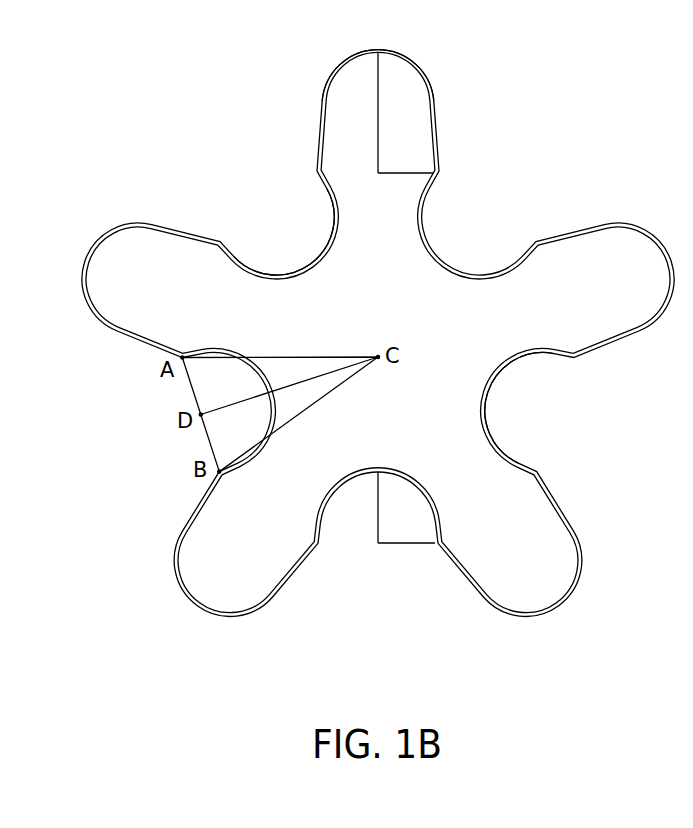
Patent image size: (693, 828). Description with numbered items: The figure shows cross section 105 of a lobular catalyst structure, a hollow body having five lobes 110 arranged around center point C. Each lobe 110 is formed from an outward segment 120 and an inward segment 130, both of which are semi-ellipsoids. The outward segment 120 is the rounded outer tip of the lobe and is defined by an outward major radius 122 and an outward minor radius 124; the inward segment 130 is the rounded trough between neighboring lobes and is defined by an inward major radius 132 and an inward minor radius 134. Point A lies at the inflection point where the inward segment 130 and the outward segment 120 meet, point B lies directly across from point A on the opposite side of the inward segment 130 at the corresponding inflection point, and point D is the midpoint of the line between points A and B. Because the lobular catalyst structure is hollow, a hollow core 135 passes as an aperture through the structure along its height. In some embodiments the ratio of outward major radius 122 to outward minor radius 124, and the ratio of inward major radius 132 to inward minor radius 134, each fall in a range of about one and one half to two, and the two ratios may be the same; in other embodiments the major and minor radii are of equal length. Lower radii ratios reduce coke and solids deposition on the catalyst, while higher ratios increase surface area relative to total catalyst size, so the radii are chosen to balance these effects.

The cross section 105 is at (384, 333).
The lobe 110 is at (443, 150).
The outward segment 120 is at (348, 63).
The outward major radius 122 is at (377, 118).
The outward minor radius 124 is at (397, 172).
The inward segment 130 is at (310, 267).
The inward major radius 132 is at (377, 518).
The inward minor radius 134 is at (403, 545).
The hollow core 135 is at (405, 368).